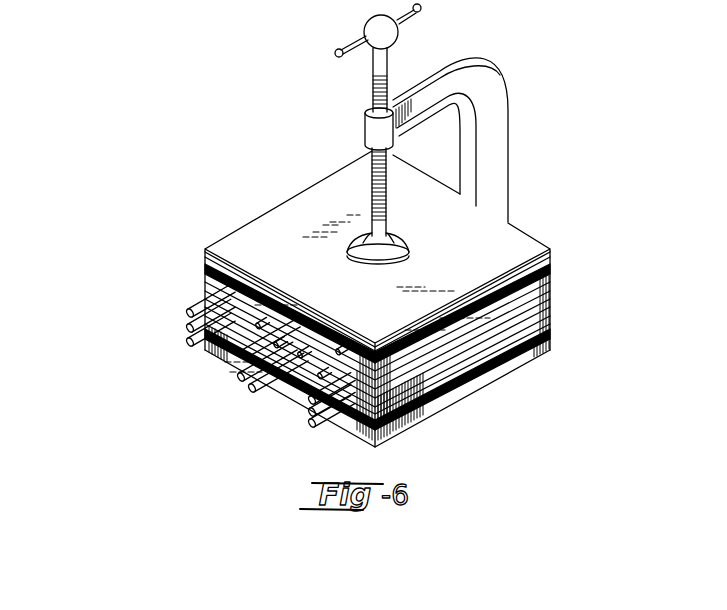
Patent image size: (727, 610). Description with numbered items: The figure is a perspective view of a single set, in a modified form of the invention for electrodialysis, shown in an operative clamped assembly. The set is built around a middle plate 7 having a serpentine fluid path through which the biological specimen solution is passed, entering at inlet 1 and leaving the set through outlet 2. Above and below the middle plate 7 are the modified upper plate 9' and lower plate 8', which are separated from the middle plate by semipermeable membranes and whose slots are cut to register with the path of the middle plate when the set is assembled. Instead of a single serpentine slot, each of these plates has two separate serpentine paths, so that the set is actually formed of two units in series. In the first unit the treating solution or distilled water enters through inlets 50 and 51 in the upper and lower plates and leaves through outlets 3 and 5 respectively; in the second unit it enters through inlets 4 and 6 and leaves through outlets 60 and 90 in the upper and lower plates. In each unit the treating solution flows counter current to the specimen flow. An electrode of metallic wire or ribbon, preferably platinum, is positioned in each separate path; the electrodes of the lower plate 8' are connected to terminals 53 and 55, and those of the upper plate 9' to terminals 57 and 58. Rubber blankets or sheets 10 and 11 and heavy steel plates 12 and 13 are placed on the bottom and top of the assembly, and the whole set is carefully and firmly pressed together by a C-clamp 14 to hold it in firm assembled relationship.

The inlet 1 is at (308, 415).
The outlet 2 is at (188, 346).
The outlet 3 is at (309, 408).
The inlet 4 is at (185, 320).
The outlet 5 is at (313, 424).
The inlet 6 is at (187, 349).
The middle plate 7 is at (553, 301).
The lower plate 8' is at (404, 361).
The upper plate 9' is at (404, 320).
The rubber blanket 10 is at (553, 337).
The rubber blanket 11 is at (553, 266).
The heavy steel plate 12 is at (545, 353).
The heavy steel plate 13 is at (550, 249).
The C-clamp 14 is at (510, 150).
The inlet 50 is at (238, 370).
The inlet 51 is at (247, 395).
The terminal 53 is at (343, 349).
The terminal 55 is at (304, 351).
The terminal 57 is at (325, 372).
The terminal 58 is at (261, 323).
The outlet 60 is at (280, 340).
The outlet 90 is at (245, 378).